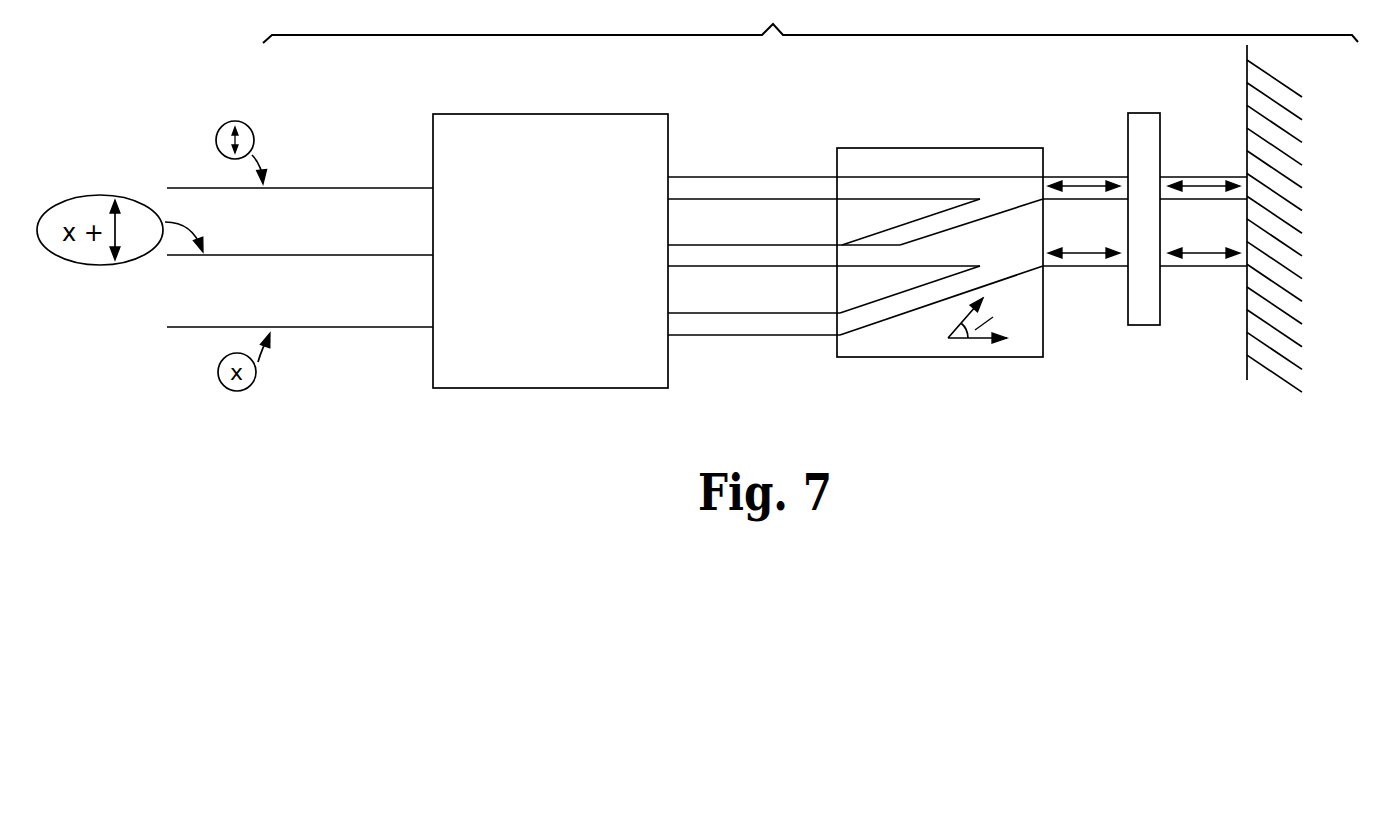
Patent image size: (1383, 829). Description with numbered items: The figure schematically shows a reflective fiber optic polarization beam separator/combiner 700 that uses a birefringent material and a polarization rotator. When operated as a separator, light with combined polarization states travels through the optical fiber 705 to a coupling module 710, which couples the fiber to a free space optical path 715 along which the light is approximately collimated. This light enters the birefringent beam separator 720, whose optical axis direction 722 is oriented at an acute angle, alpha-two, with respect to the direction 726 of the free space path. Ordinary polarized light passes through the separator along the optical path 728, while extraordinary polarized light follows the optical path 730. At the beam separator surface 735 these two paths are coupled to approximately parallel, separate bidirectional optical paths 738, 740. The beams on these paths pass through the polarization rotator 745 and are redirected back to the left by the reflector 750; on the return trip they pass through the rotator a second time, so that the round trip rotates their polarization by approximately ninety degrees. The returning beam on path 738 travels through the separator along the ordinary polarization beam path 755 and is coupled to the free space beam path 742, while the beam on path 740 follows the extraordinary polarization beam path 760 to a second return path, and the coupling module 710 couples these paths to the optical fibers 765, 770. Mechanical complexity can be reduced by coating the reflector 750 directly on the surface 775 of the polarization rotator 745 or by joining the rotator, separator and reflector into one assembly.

The reflective fiber optic polarization beam separator/combiner 700 is at (810, 21).
The optical fiber 705 is at (220, 256).
The coupling module 710 is at (545, 390).
The free space optical path 715 is at (713, 244).
The birefringent beam separator 720 is at (900, 147).
The optical axis direction 722 is at (952, 330).
The direction of the free space optical path 726 is at (962, 341).
The optical path 728 is at (982, 244).
The optical path 730 is at (917, 218).
The beam separator surface 735 is at (1045, 351).
The bidirectional optical path 738 is at (1073, 173).
The bidirectional optical path 740 is at (1072, 266).
The free space beam path 742 is at (713, 175).
The polarization rotator 745 is at (718, 337).
The reflector 750 is at (1245, 362).
The ordinary polarization beam path 755 is at (942, 176).
The extraordinary polarization beam path 760 is at (882, 321).
The optical fiber 765 is at (367, 189).
The optical fiber 770 is at (367, 328).
The surface of the polarization rotator 775 is at (1160, 133).